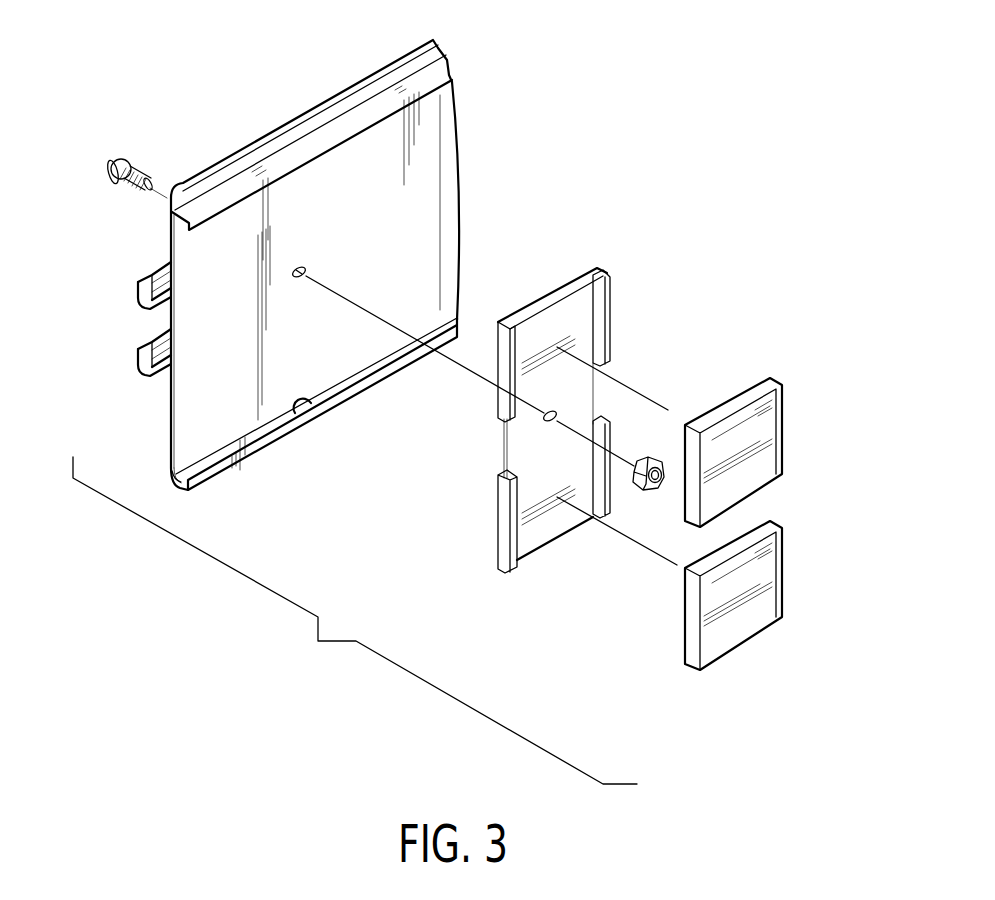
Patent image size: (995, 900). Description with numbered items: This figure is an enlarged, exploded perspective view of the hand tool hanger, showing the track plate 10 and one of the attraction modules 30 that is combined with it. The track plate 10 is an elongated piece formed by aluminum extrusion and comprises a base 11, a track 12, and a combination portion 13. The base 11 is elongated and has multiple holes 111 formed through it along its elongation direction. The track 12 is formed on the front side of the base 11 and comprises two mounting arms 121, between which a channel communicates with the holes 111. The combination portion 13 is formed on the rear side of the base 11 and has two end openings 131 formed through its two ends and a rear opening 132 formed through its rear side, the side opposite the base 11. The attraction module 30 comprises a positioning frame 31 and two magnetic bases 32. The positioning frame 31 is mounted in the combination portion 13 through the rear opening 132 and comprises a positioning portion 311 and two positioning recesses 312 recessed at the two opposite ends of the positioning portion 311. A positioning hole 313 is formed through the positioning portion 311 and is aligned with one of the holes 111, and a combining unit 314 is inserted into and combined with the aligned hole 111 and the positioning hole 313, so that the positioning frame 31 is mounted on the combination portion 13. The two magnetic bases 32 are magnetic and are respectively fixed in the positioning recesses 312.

The track plate 10 is at (255, 262).
The base 11 is at (311, 135).
The holes 111 is at (334, 254).
The track 12 is at (111, 324).
The mounting arms 121 is at (119, 324).
The combination portion 13 is at (278, 412).
The end openings 131 is at (141, 467).
The rear opening 132 is at (331, 434).
The attraction module 30 is at (568, 459).
The positioning frame 31 is at (527, 430).
The positioning portion 311 is at (520, 414).
The positioning recesses 312 is at (553, 430).
The positioning hole 313 is at (589, 408).
The combining unit 314 is at (144, 150).
The magnetic bases 32 is at (757, 524).